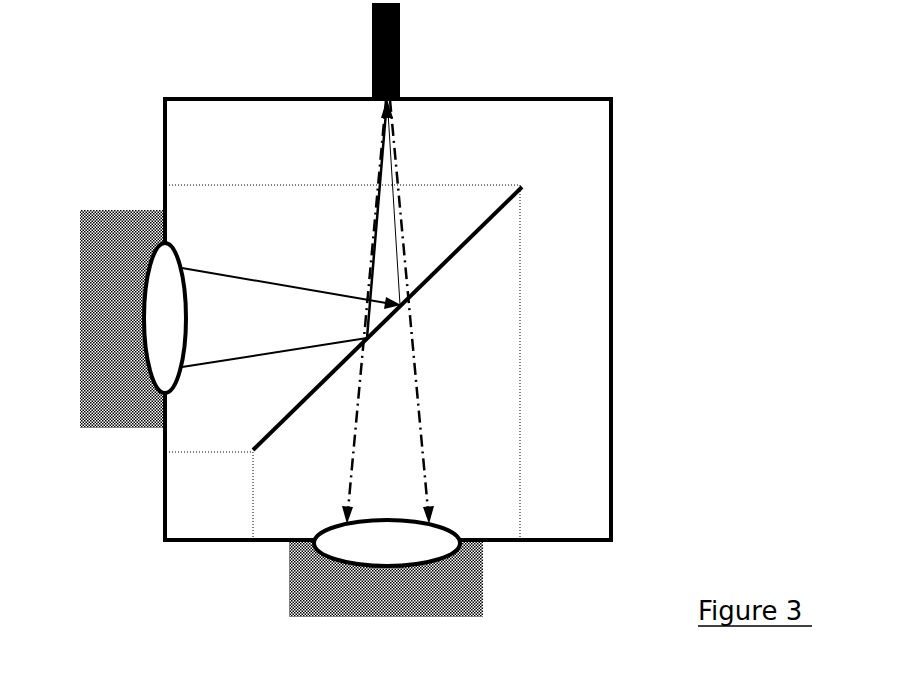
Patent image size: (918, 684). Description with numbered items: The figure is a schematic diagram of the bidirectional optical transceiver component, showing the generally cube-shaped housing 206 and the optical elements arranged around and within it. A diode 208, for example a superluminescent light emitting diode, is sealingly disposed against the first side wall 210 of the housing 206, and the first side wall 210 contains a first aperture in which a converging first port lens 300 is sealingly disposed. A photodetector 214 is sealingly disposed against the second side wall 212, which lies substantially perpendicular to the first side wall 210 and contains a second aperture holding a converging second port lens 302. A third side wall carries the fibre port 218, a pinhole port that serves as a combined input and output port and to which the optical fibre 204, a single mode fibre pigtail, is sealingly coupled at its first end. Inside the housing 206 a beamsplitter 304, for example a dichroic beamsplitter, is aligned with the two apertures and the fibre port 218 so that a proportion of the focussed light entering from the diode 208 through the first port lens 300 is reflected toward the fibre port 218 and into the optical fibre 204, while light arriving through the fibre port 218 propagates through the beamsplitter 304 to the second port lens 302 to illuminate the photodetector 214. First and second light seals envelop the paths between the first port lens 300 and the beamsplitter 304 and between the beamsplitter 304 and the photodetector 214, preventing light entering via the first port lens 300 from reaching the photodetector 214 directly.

The optical fibre 204 is at (400, 66).
The housing 206 is at (613, 162).
The diode 208 is at (102, 428).
The first side wall 210 is at (146, 496).
The second side wall 212 is at (221, 556).
The photodetector 214 is at (483, 585).
The fibre port 218 is at (410, 114).
The first port lens 300 is at (157, 337).
The second port lens 302 is at (368, 553).
The beamsplitter 304 is at (445, 265).